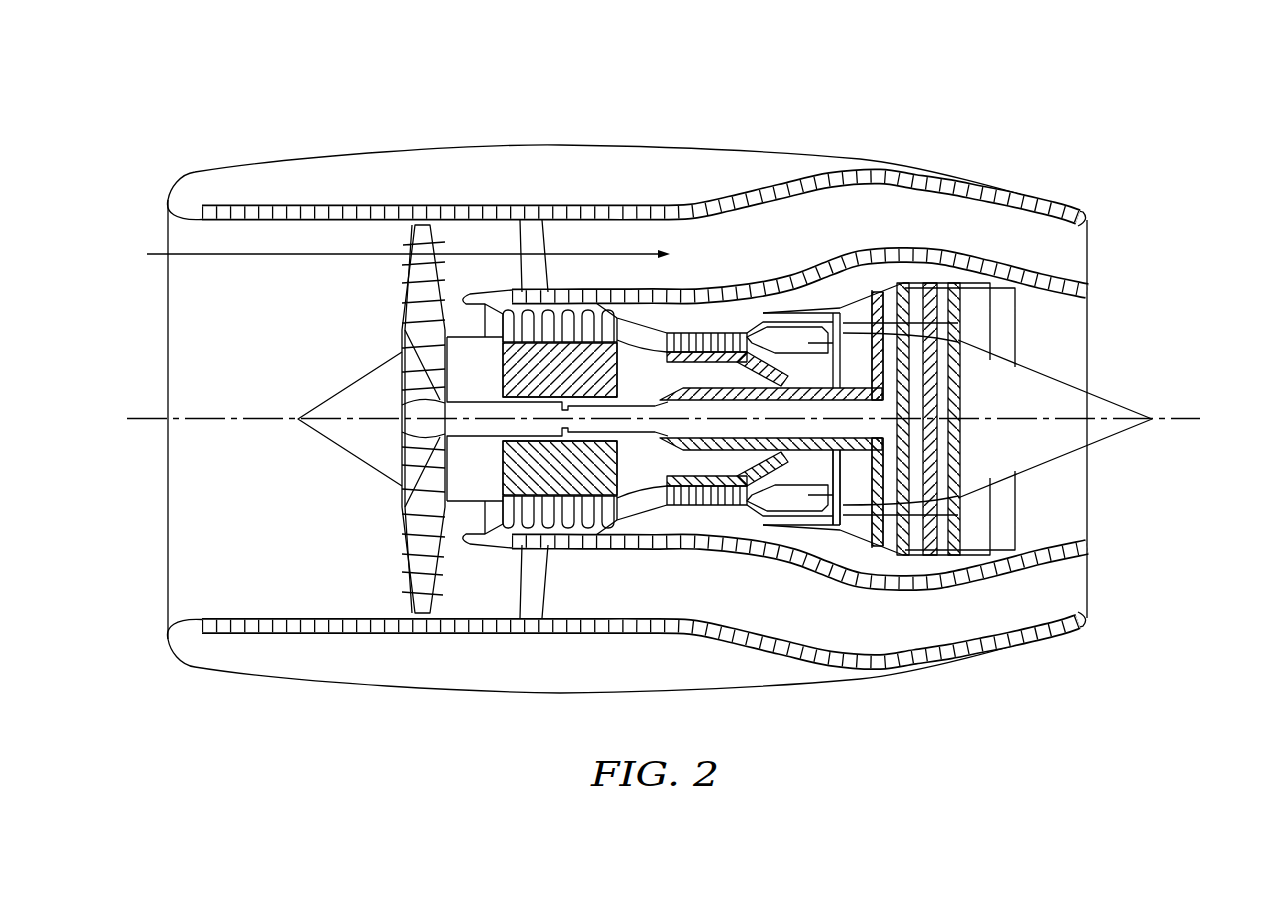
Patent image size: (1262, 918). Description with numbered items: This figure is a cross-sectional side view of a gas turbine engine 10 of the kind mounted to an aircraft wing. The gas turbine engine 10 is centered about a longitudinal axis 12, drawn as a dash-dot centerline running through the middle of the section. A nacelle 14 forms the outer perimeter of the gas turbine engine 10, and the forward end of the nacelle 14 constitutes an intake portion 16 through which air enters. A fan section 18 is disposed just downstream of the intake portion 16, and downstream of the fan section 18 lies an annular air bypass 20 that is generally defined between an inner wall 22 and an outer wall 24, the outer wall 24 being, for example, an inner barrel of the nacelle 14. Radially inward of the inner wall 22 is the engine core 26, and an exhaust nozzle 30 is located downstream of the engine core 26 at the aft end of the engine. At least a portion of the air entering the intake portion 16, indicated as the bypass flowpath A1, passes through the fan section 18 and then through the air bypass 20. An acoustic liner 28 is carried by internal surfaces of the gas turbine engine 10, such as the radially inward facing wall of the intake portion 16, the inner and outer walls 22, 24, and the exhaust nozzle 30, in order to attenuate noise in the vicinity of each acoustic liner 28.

The gas turbine engine 10 is at (975, 100).
The longitudinal axis 12 is at (1210, 432).
The nacelle 14 is at (386, 130).
The intake portion 16 is at (220, 603).
The fan section 18 is at (386, 486).
The annular air bypass 20 is at (806, 238).
The inner wall 22 is at (872, 266).
The outer wall 24 is at (727, 198).
The engine core 26 is at (812, 542).
The acoustic liner 28 is at (328, 206).
The exhaust nozzle 30 is at (1066, 346).
The bypass flowpath A1 is at (343, 258).